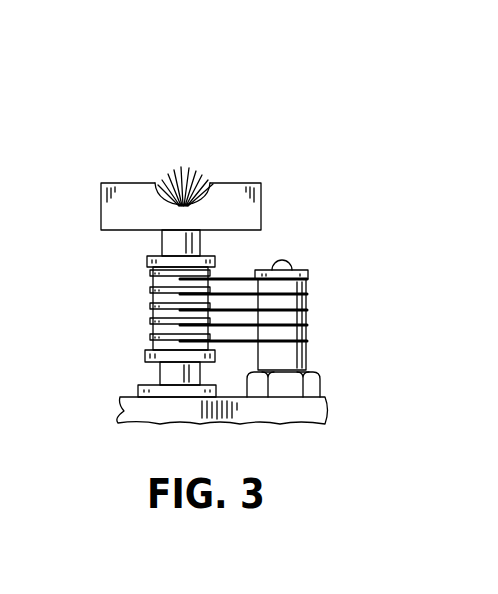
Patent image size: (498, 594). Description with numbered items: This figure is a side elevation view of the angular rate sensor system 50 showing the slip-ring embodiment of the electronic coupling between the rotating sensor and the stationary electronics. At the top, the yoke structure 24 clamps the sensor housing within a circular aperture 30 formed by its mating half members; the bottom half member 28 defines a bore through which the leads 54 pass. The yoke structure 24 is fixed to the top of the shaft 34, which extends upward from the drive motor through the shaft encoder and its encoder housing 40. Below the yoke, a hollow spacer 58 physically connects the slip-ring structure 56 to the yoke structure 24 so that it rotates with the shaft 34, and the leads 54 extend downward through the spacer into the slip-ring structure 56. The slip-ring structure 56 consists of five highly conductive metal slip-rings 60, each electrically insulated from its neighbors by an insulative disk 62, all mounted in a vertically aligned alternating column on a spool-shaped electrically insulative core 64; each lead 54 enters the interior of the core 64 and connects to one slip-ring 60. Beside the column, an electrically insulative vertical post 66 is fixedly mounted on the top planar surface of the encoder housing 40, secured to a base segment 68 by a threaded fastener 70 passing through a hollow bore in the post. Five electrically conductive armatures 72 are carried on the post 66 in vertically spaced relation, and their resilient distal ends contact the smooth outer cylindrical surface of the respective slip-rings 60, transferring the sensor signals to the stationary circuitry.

The electrical connector assembly 50 is at (76, 170).
The yoke structure 24 is at (94, 225).
The bottom half member 28 is at (252, 217).
The circular aperture 30 is at (162, 181).
The leads 54 is at (181, 178).
The hollow spacer 58 is at (165, 238).
The slip-ring structure 56 is at (140, 302).
The electrically insulative core 64 is at (212, 259).
The slip-ring 60 is at (152, 275).
The insulative disk 62 is at (147, 288).
The armature 72 is at (308, 312).
The shaft 34 is at (163, 373).
The electrically insulative vertical post 66 is at (300, 357).
The threaded fastener 70 is at (290, 262).
The base segment 68 is at (315, 387).
The encoder housing 40 is at (121, 413).